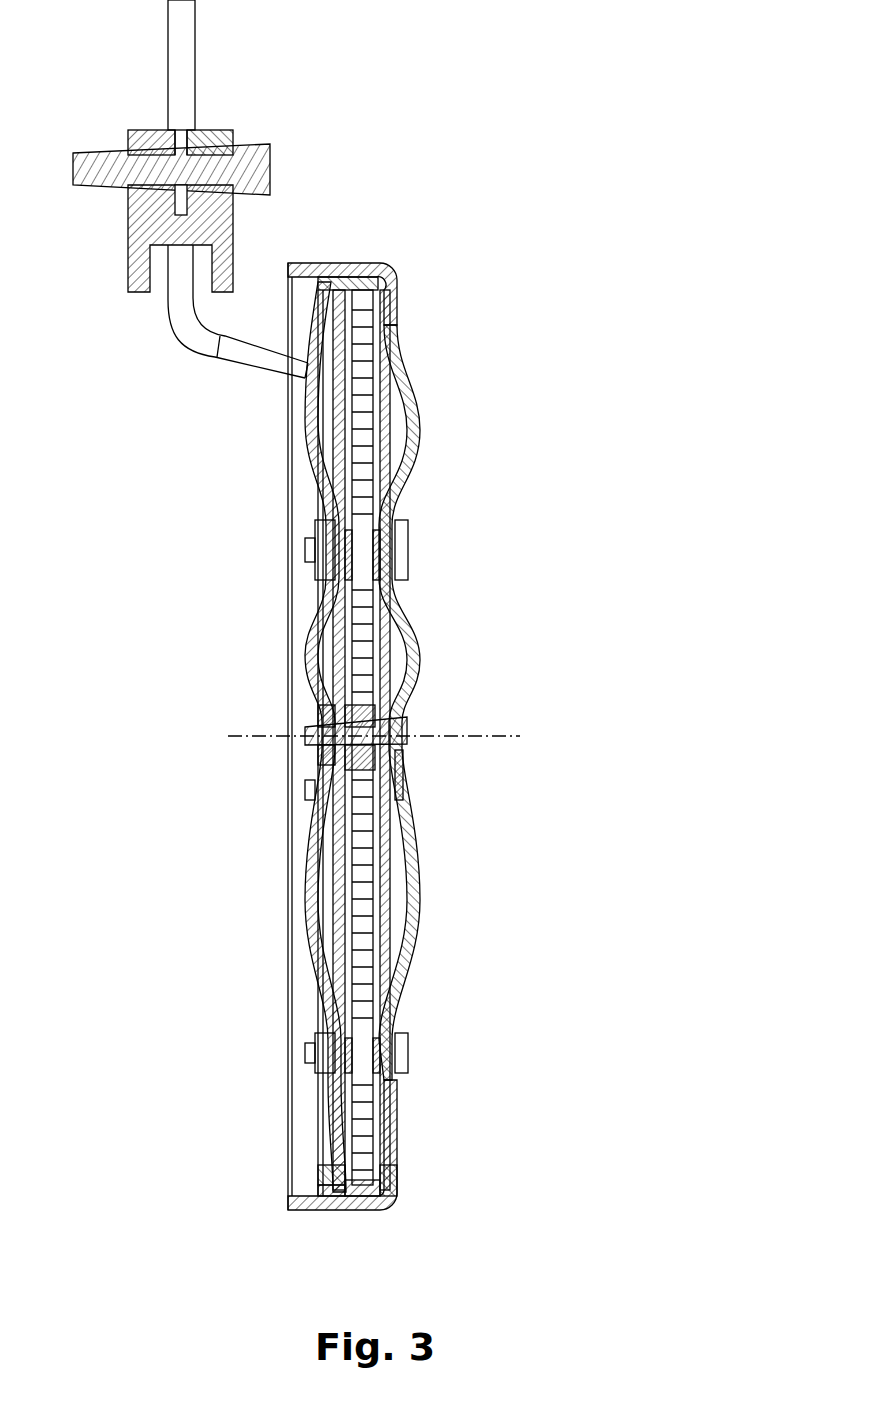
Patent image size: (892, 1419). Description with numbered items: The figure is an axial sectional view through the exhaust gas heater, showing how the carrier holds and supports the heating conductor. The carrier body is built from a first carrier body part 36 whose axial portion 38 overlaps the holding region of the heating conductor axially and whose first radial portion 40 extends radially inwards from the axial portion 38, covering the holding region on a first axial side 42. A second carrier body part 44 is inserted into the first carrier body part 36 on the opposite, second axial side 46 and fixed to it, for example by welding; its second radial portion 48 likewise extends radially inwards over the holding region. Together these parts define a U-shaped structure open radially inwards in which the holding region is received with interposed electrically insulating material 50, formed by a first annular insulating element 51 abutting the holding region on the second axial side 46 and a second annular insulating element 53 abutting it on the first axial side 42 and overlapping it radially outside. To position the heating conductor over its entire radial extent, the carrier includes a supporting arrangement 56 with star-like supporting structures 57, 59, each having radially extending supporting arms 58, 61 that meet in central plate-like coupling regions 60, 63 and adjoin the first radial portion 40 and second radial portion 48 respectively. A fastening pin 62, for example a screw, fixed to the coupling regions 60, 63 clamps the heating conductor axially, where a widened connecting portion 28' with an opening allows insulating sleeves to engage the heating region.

The second radial portion 48 is at (330, 302).
The first carrier body part 36 is at (390, 270).
The axial portion 38 is at (325, 263).
The first radial portion 40 is at (395, 292).
The second annular insulating element 53 is at (392, 1168).
The electrically insulating material 50 is at (358, 1196).
The second carrier body part 44 is at (325, 1163).
The first annular insulating element 51 is at (325, 1170).
The supporting arms 61 is at (318, 890).
The star-like supporting structure 59 is at (318, 812).
The connecting portion 28' is at (430, 737).
The star-like supporting structure 57 is at (408, 655).
The supporting arms 58 is at (420, 890).
The fastening pin 62 is at (412, 745).
The coupling region 60 is at (405, 709).
The coupling region 63 is at (325, 714).
The second axial side 46 is at (170, 577).
The first axial side 42 is at (500, 576).
The supporting arrangement 56 is at (500, 790).